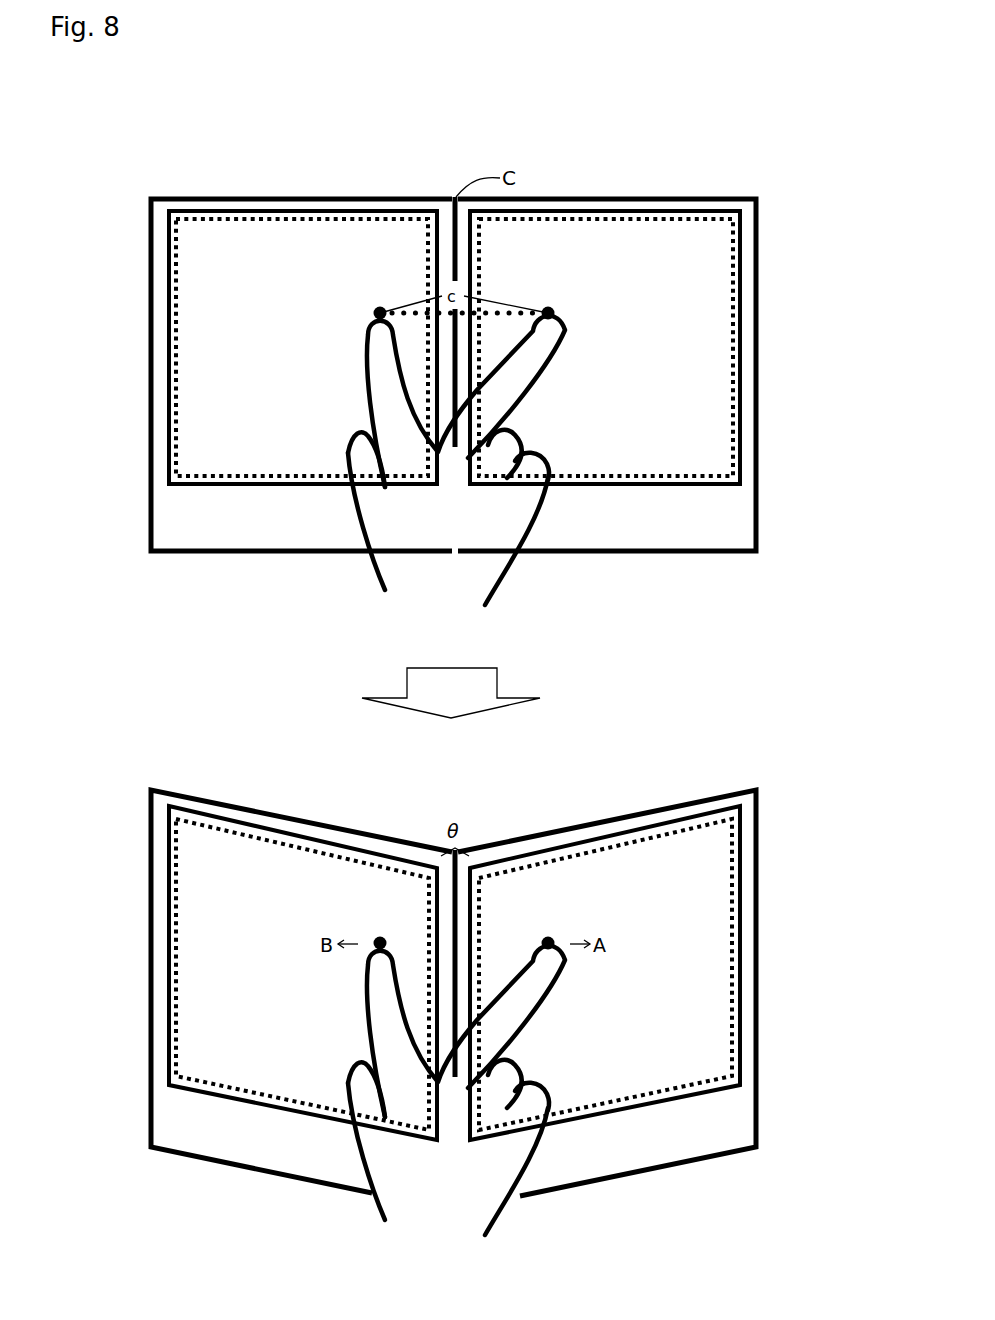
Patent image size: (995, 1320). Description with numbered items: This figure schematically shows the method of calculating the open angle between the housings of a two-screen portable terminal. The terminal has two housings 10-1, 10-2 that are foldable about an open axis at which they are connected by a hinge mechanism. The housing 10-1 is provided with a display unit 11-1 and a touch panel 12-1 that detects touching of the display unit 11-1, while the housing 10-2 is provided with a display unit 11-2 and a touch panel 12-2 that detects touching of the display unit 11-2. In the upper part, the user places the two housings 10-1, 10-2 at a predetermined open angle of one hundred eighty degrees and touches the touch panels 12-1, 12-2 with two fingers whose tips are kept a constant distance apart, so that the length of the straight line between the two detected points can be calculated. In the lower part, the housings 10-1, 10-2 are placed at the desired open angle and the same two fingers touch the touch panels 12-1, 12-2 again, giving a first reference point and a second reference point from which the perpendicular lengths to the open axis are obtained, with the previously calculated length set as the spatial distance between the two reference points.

The housing 10-1 is at (660, 810).
The housing 10-2 is at (247, 809).
The display unit 11-1 is at (740, 288).
The display unit 11-2 is at (168, 288).
The touch panel 12-1 is at (733, 376).
The touch panel 12-2 is at (176, 376).